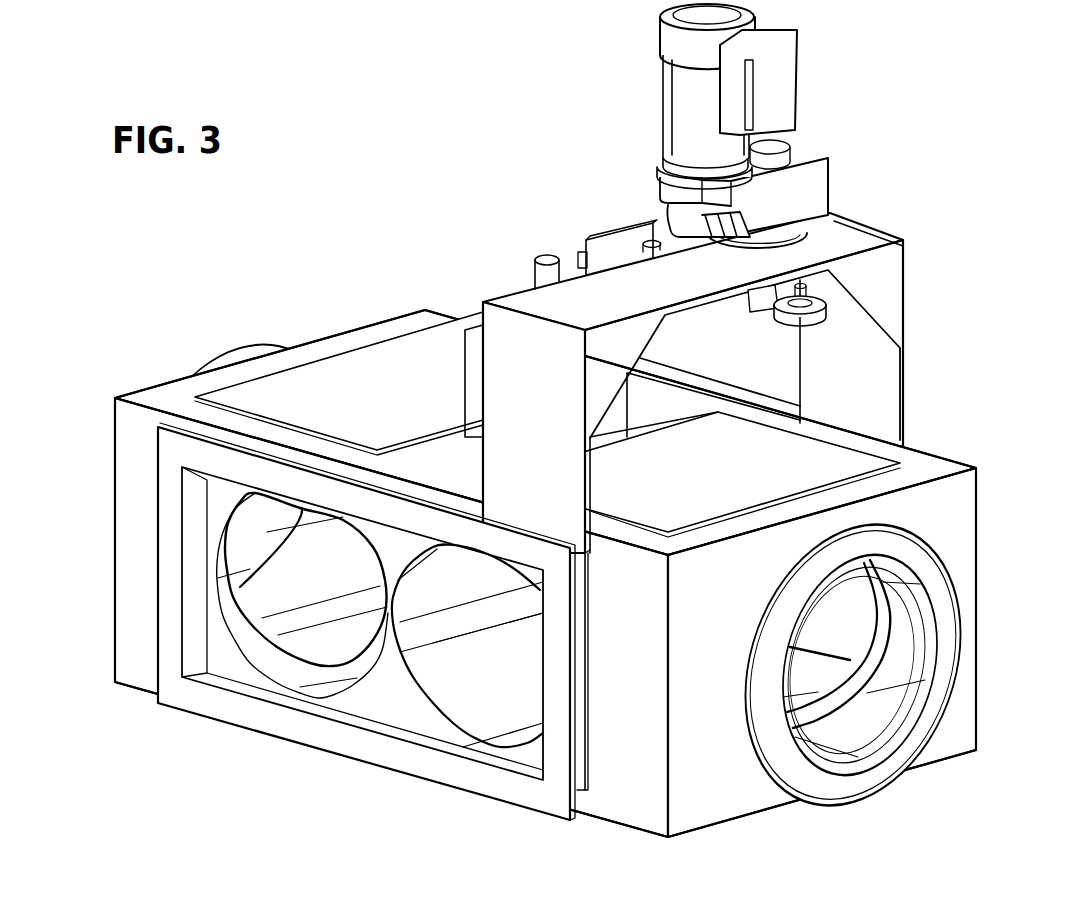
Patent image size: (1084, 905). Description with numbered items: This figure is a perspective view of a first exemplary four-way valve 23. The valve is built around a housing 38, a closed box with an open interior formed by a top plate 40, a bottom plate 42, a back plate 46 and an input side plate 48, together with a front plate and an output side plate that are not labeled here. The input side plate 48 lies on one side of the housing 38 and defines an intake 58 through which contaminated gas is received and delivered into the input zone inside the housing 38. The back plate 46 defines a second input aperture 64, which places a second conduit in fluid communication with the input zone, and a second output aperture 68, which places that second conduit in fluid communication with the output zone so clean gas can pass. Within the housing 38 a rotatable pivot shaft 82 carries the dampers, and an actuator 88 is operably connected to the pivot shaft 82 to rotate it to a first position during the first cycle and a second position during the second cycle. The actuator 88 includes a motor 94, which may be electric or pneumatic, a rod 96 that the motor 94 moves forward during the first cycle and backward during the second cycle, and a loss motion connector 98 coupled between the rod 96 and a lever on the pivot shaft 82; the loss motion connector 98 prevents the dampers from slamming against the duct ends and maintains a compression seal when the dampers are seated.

The four-way valve 23 is at (926, 187).
The housing 38 is at (990, 518).
The top plate 40 is at (940, 464).
The bottom plate 42 is at (606, 822).
The back plate 46 is at (623, 782).
The input side plate 48 is at (960, 558).
The intake 58 is at (905, 655).
The second input aperture 64 is at (430, 706).
The second output aperture 68 is at (266, 665).
The pivot shaft 82 is at (548, 255).
The actuator 88 is at (805, 72).
The motor 94 is at (681, 92).
The rod 96 is at (810, 290).
The loss motion connector 98 is at (622, 218).